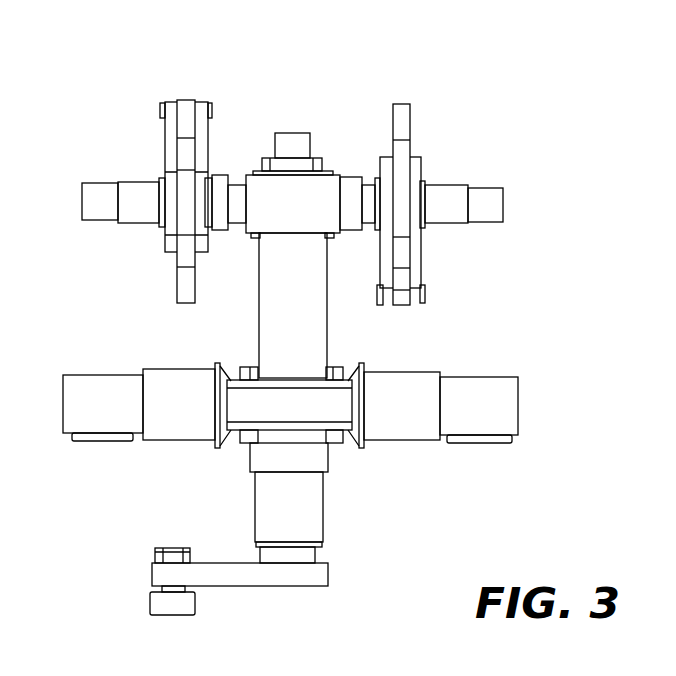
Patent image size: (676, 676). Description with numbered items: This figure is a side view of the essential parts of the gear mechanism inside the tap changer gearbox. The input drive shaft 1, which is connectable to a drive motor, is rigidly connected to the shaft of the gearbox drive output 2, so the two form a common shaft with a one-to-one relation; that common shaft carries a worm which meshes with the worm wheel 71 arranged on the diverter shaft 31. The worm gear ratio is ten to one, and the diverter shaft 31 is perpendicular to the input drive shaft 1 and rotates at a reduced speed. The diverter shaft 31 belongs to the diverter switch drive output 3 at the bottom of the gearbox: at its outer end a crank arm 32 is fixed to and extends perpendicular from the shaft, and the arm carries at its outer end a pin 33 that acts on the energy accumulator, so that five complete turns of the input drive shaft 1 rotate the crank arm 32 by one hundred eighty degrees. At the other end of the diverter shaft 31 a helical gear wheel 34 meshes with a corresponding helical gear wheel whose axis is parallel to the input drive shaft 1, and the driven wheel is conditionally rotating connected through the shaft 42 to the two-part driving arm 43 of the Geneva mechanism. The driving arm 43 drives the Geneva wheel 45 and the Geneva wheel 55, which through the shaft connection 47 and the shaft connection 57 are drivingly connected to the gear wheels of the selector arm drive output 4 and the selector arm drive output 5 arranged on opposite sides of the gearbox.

The input drive shaft 1 is at (108, 415).
The gearbox drive output 2 is at (493, 415).
The diverter switch drive output 3 is at (347, 603).
The selector arm drive output 4 is at (103, 147).
The selector arm drive output 5 is at (522, 127).
The diverter shaft 31 is at (267, 317).
The crank arm 32 is at (270, 575).
The pin 33 is at (383, 308).
The helical gear wheel 34 is at (288, 193).
The shaft 42 is at (200, 193).
The driving arm 43 is at (200, 99).
The Geneva wheel 45 is at (183, 283).
The shaft connection 47 is at (98, 203).
The Geneva wheel 55 is at (400, 127).
The shaft connection 57 is at (482, 200).
The worm wheel 71 is at (250, 408).